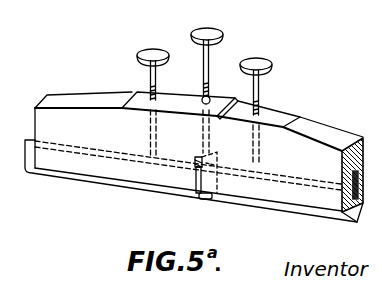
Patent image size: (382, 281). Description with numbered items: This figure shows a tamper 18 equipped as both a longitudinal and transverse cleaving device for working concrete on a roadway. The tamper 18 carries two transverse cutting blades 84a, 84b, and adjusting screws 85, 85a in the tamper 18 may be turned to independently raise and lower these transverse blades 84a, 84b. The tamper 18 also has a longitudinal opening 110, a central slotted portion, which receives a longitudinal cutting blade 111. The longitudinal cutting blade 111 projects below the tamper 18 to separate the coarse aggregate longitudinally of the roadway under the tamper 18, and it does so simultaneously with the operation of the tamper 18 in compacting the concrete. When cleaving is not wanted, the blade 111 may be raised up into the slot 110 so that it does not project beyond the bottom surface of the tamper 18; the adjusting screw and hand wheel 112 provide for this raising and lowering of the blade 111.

The tamper 18 is at (60, 99).
The transverse blade 84a is at (82, 181).
The transverse blade 84b is at (285, 208).
The adjusting screw 85 is at (263, 88).
The adjusting screw 85a is at (148, 77).
The longitudinal opening 110 is at (196, 158).
The longitudinal cutting blade 111 is at (205, 200).
The adjusting screw and hand wheel 112 is at (209, 55).